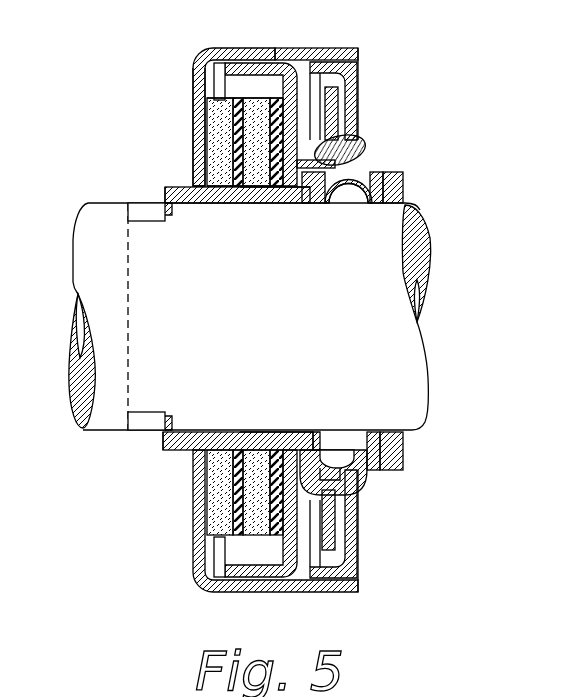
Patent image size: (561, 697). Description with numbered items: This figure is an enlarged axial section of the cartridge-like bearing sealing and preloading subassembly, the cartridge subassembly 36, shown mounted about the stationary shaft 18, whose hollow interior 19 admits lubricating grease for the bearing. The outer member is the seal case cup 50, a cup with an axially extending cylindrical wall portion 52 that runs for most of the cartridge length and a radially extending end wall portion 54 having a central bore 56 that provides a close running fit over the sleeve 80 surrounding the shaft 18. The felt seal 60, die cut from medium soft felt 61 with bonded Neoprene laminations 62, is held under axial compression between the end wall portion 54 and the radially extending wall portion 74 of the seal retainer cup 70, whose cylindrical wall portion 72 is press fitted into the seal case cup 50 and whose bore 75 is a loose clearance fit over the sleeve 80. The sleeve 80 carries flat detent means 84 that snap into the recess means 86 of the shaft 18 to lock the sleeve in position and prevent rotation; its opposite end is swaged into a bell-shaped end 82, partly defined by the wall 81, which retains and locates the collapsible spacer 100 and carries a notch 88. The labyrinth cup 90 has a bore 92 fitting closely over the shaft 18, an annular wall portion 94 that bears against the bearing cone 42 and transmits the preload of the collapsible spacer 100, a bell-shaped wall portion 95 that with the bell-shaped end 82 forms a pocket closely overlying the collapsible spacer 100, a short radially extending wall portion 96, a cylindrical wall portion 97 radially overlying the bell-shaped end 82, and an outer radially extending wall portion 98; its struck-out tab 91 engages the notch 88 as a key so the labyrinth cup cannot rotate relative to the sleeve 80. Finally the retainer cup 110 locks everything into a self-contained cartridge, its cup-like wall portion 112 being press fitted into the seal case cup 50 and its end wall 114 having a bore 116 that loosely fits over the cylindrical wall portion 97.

The stationary shaft 18 is at (72, 268).
The hollow interior 19 is at (78, 340).
The cartridge subassembly 36 is at (360, 46).
The bearing cone 42 is at (402, 190).
The seal case cup 50 is at (262, 46).
The cylindrical wall portion 52 is at (300, 48).
The end wall portion 54 is at (197, 120).
The bore 56 is at (198, 205).
The felt seal 60 is at (208, 147).
The medium soft felt 61 is at (205, 172).
The laminations 62 is at (210, 105).
The seal retainer cup 70 is at (240, 62).
The cylindrical wall portion 72 is at (212, 66).
The radially extending wall portion 74 is at (275, 92).
The bore 75 is at (275, 197).
The sleeve 80 is at (248, 205).
The wall 81 is at (320, 440).
The bell-shaped end 82 is at (360, 485).
The detent means 84 is at (140, 210).
The recess means 86 is at (168, 218).
The notch 88 is at (334, 103).
The labyrinth cup 90 is at (350, 100).
The tab 91 is at (316, 205).
The bore 92 is at (376, 204).
The annular wall portion 94 is at (405, 448).
The bell-shaped wall portion 95 is at (370, 172).
The radially extending wall portion 96 is at (365, 158).
The cylindrical wall portion 97 is at (350, 505).
The radially extending wall portion 98 is at (360, 72).
The collapsible spacer 100 is at (348, 188).
The retainer cup 110 is at (358, 562).
The cup-like wall portion 112 is at (328, 585).
The end wall 114 is at (335, 530).
The bore 116 is at (355, 140).